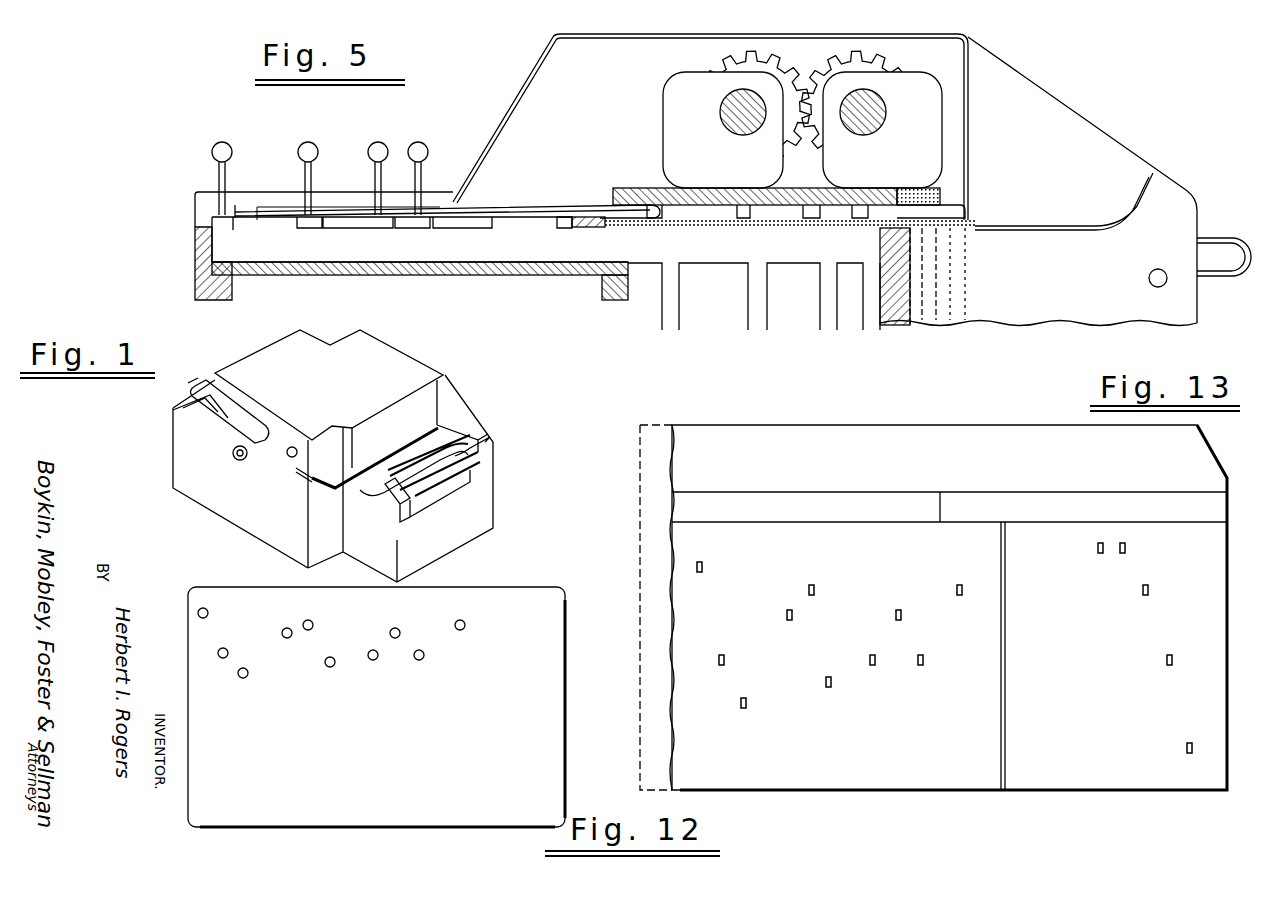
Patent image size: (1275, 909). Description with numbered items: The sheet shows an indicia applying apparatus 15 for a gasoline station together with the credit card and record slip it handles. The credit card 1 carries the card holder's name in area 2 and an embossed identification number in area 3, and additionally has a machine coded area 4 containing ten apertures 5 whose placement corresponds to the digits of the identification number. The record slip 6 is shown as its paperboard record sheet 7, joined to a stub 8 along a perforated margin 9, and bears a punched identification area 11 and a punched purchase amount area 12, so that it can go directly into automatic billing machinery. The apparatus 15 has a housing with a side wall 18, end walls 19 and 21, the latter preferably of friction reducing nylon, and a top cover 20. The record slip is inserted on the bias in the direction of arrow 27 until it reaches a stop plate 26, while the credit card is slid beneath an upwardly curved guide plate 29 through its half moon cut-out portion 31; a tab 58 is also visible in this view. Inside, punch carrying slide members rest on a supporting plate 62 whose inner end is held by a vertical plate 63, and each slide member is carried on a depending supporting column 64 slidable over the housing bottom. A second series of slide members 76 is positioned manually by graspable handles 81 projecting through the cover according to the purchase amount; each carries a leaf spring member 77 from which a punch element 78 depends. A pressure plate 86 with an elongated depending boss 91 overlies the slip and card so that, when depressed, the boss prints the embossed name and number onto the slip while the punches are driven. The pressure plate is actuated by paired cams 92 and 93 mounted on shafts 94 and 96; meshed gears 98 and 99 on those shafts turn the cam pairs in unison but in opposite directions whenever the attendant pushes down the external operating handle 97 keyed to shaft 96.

In FIG. 1, the credit card 1 is at (452, 466).
In FIG. 12, the credit card 1 is at (572, 636).
In FIG. 12, the card holder name area 2 is at (350, 788).
In FIG. 12, the identification number area 3 is at (486, 755).
In FIG. 12, the machine coded indicia area 4 is at (212, 634).
In FIG. 12, the apertures 5 is at (415, 660).
In FIG. 5, the record slip 6 is at (978, 221).
In FIG. 1, the record slip 6 is at (434, 436).
In FIG. 13, the record slip 6 is at (1033, 425).
In FIG. 13, the record sheet 7 is at (1216, 468).
In FIG. 13, the stub 8 is at (652, 456).
In FIG. 13, the perforated margin 9 is at (670, 514).
In FIG. 13, the identification indicia area 11 is at (822, 742).
In FIG. 13, the purchase amount indicia area 12 is at (1094, 758).
In FIG. 1, the indicia applying apparatus 15 is at (334, 456).
In FIG. 1, the side wall 18 is at (247, 510).
In FIG. 5, the end wall 19 is at (200, 290).
In FIG. 1, the top cover 20 is at (366, 384).
In FIG. 1, the end wall 21 is at (462, 532).
In FIG. 5, the stop plate 26 is at (584, 226).
In FIG. 1, the insertion direction arrow 27 is at (333, 500).
In FIG. 5, the guide plate 29 is at (1103, 222).
In FIG. 1, the guide plate 29 is at (363, 493).
In FIG. 1, the half moon cut-out portion 31 is at (420, 448).
In FIG. 5, the latch tab 58 is at (1226, 238).
In FIG. 1, the latch tab 58 is at (445, 490).
In FIG. 5, the supporting plate 62 is at (520, 275).
In FIG. 5, the vertical plate 63 is at (602, 290).
In FIG. 5, the supporting column 64 is at (755, 300).
In FIG. 5, the slide members 76 is at (289, 251).
In FIG. 5, the leaf spring member 77 is at (542, 215).
In FIG. 5, the punch element 78 is at (722, 219).
In FIG. 5, the graspable handle 81 is at (304, 142).
In FIG. 1, the graspable handle 81 is at (190, 384).
In FIG. 5, the pressure plate 86 is at (798, 196).
In FIG. 5, the depending boss 91 is at (958, 235).
In FIG. 5, the cam members 92 is at (904, 156).
In FIG. 5, the cam members 93 is at (722, 156).
In FIG. 5, the shaft 94 is at (870, 108).
In FIG. 1, the shaft 94 is at (290, 458).
In FIG. 5, the shaft 96 is at (722, 106).
In FIG. 1, the shaft 96 is at (242, 460).
In FIG. 1, the operating handle 97 is at (245, 426).
In FIG. 5, the gear 98 is at (715, 50).
In FIG. 5, the gear 99 is at (890, 53).